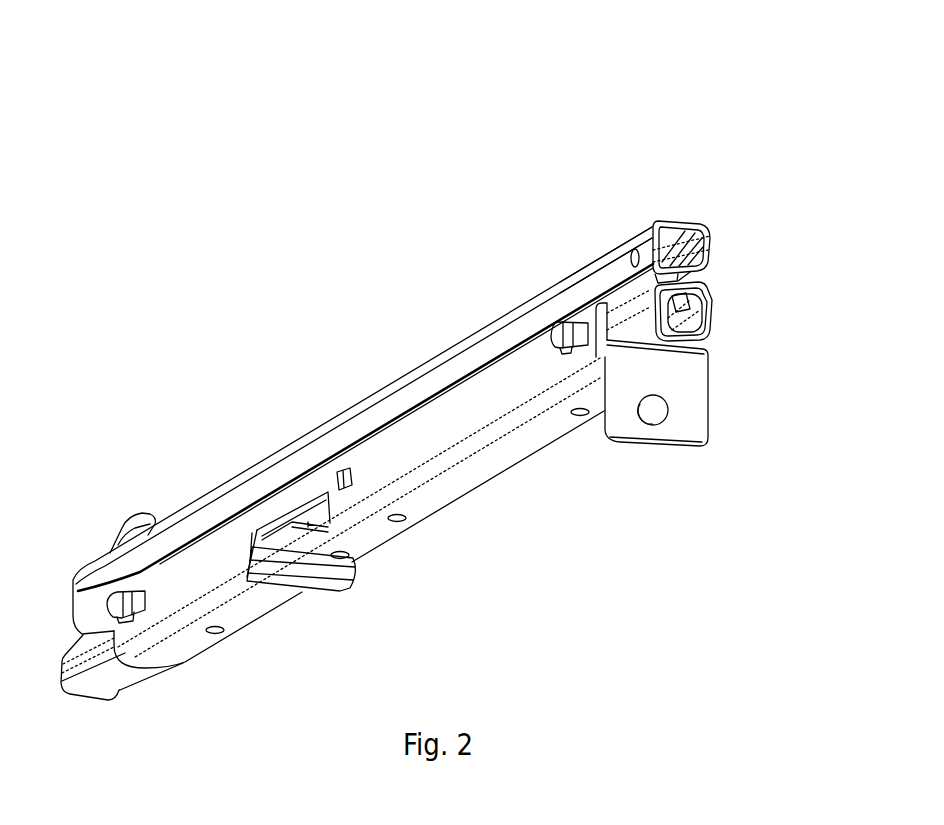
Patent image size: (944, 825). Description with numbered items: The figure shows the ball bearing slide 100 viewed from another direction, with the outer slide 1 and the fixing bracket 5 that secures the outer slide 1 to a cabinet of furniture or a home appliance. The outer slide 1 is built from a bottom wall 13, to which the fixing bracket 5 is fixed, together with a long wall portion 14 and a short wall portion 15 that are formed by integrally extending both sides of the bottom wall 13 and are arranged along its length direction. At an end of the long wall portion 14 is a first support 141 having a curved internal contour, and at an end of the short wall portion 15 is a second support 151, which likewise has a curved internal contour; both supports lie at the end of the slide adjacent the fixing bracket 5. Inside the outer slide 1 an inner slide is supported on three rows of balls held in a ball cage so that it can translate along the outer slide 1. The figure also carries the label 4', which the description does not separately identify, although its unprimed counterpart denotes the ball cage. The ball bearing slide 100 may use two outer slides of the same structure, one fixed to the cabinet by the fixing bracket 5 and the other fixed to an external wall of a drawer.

The ball bearing slide 100 is at (272, 196).
The outer slide 1 is at (420, 366).
The long wall portion 14 is at (623, 247).
The first support 141 is at (620, 247).
The bottom wall 13 is at (683, 219).
The short wall portion 15 is at (709, 242).
The second support 151 is at (708, 266).
The connector 4' is at (726, 336).
The fixing bracket 5 is at (623, 410).